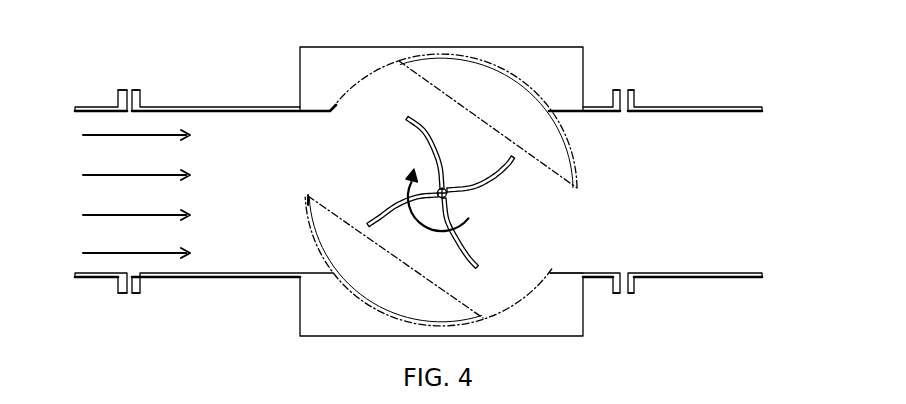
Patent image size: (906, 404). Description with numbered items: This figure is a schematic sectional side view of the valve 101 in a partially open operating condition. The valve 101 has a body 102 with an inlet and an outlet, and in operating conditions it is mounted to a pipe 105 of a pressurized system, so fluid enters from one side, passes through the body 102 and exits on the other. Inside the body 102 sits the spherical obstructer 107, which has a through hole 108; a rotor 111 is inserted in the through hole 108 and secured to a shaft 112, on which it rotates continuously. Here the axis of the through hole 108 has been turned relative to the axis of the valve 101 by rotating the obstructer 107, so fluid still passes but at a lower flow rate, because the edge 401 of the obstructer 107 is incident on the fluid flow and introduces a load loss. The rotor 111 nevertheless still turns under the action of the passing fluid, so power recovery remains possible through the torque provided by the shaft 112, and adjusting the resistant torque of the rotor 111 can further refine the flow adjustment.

The valve 101 is at (600, 62).
The body 102 is at (317, 322).
The pipe 105 is at (116, 280).
The spherical obstructer 107 is at (463, 73).
The through hole 108 is at (576, 232).
The rotor 111 is at (422, 150).
The shaft 112 is at (452, 196).
The edge 401 is at (323, 232).